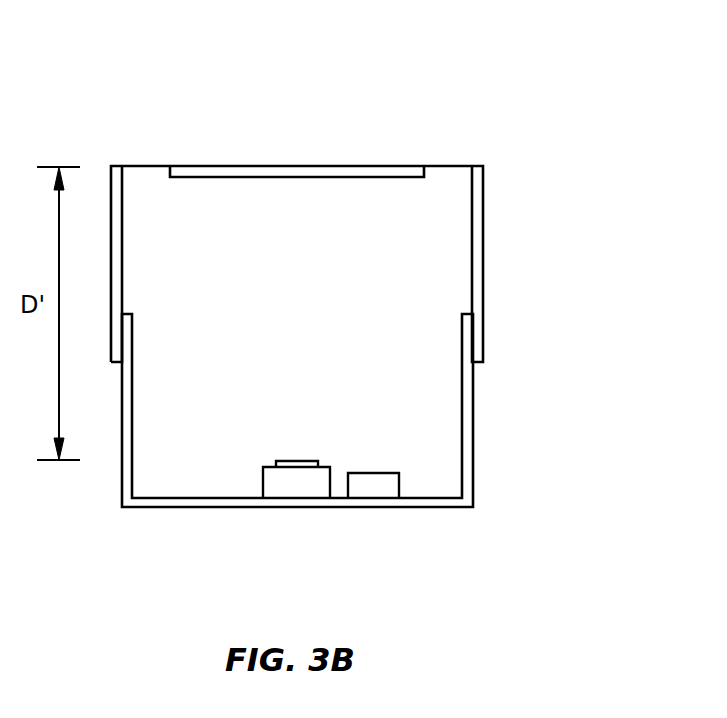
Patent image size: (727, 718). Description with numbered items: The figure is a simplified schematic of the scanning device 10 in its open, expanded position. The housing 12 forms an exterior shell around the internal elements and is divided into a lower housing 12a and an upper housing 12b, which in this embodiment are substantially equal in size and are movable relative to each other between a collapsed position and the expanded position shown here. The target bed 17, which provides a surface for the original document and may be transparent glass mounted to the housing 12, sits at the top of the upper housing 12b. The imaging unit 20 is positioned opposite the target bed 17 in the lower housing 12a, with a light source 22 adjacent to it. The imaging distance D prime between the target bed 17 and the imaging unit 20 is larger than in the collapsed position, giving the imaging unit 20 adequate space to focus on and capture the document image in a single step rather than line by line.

The scanning device 10 is at (183, 106).
The housing 12 is at (533, 316).
The lower housing 12a is at (473, 483).
The upper housing 12b is at (483, 275).
The target bed 17 is at (353, 168).
The imaging unit 20 is at (280, 478).
The light source 22 is at (374, 485).